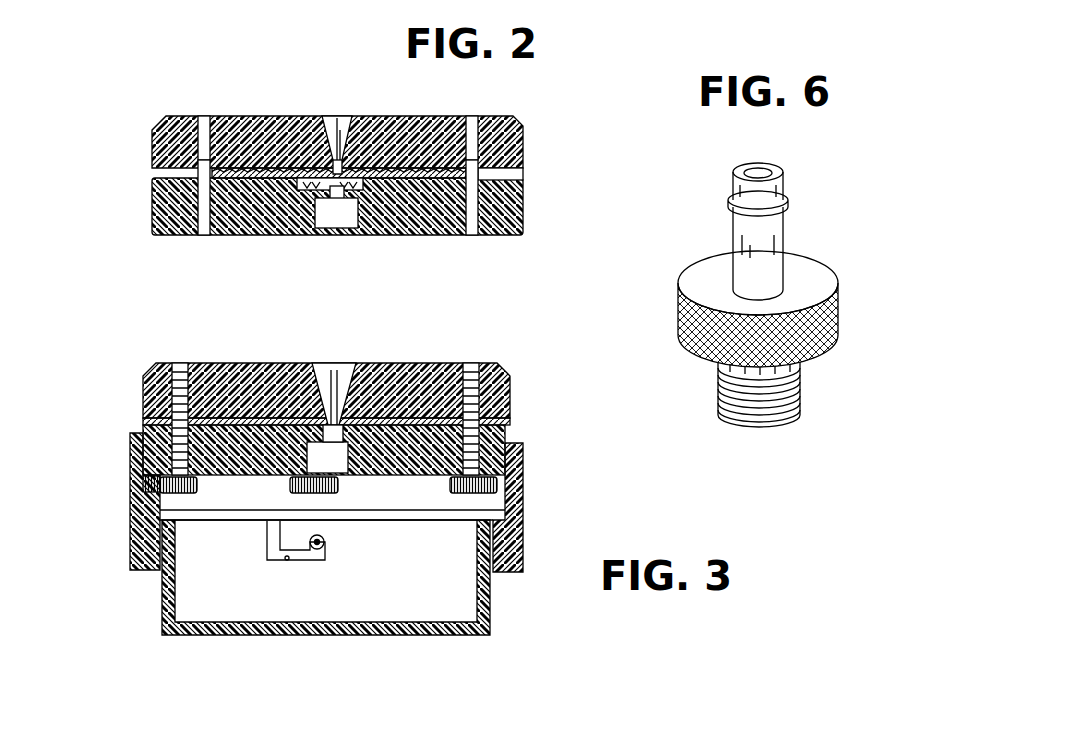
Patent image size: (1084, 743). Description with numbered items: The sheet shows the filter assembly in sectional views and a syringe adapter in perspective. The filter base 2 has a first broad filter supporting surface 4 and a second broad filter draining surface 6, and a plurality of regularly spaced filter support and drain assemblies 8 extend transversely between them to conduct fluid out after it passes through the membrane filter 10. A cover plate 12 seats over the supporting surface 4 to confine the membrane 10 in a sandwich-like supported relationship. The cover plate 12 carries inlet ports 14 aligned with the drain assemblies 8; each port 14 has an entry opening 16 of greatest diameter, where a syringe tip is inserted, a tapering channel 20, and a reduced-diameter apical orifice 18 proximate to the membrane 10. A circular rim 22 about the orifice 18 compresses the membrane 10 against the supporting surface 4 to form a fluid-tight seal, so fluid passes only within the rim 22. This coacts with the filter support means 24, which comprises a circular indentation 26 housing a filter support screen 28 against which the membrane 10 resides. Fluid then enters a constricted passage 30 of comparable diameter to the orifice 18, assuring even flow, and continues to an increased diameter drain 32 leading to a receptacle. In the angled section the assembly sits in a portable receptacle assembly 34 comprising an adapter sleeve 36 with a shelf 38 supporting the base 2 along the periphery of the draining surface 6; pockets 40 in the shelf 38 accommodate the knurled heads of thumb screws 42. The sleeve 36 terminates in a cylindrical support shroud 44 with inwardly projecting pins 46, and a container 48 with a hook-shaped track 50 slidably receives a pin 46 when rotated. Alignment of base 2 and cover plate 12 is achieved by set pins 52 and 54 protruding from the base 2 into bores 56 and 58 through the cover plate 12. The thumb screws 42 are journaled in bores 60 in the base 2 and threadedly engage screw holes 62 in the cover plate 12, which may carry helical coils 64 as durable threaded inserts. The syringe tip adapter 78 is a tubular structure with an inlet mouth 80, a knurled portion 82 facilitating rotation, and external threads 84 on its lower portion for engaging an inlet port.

In FIG. 2, the filter base 2 is at (152, 200).
In FIG. 3, the filter base 2 is at (140, 433).
In FIG. 2, the filter supporting surface 4 is at (520, 168).
In FIG. 3, the filter supporting surface 4 is at (510, 397).
In FIG. 2, the filter draining surface 6 is at (218, 237).
In FIG. 3, the filter draining surface 6 is at (239, 487).
In FIG. 2, the filter support and drain assembly 8 is at (302, 238).
In FIG. 3, the filter support and drain assembly 8 is at (396, 512).
In FIG. 2, the membrane filter 10 is at (262, 130).
In FIG. 3, the membrane filter 10 is at (248, 385).
In FIG. 2, the cover plate 12 is at (152, 130).
In FIG. 3, the cover plate 12 is at (430, 354).
In FIG. 2, the inlet port 14 is at (333, 114).
In FIG. 3, the inlet port 14 is at (346, 364).
In FIG. 2, the entry opening 16 is at (358, 130).
In FIG. 3, the entry opening 16 is at (334, 364).
In FIG. 2, the apical orifice 18 is at (335, 130).
In FIG. 3, the apical orifice 18 is at (315, 385).
In FIG. 2, the tapering channel 20 is at (342, 135).
In FIG. 2, the rim 22 is at (378, 140).
In FIG. 3, the rim 22 is at (375, 380).
In FIG. 2, the filter support means 24 is at (242, 236).
In FIG. 2, the circular indentation 26 is at (385, 228).
In FIG. 2, the filter support screen 28 is at (290, 212).
In FIG. 2, the constricted passage 30 is at (343, 228).
In FIG. 3, the constricted passage 30 is at (330, 470).
In FIG. 2, the increased diameter drain 32 is at (350, 205).
In FIG. 3, the increased diameter drain 32 is at (341, 474).
In FIG. 3, the portable receptacle assembly 34 is at (528, 506).
In FIG. 3, the adapter sleeve 36 is at (530, 497).
In FIG. 3, the shelf 38 is at (522, 522).
In FIG. 3, the pocket 40 is at (525, 480).
In FIG. 3, the thumb screw 42 is at (145, 483).
In FIG. 3, the cylindrical support shroud 44 is at (520, 560).
In FIG. 3, the pin 46 is at (316, 555).
In FIG. 3, the container 48 is at (170, 612).
In FIG. 3, the hook-shaped track 50 is at (290, 562).
In FIG. 2, the set pin 52 is at (472, 230).
In FIG. 2, the set pin 54 is at (196, 170).
In FIG. 2, the bore 56 is at (472, 125).
In FIG. 2, the bore 58 is at (206, 118).
In FIG. 3, the bore 60 is at (145, 425).
In FIG. 3, the threaded screw hole 62 is at (180, 366).
In FIG. 3, the helical coil 64 is at (166, 368).
In FIG. 6, the syringe tip adapter 78 is at (780, 276).
In FIG. 6, the inlet mouth 80 is at (775, 168).
In FIG. 6, the knurled portion 82 is at (838, 325).
In FIG. 6, the external threads 84 is at (800, 395).